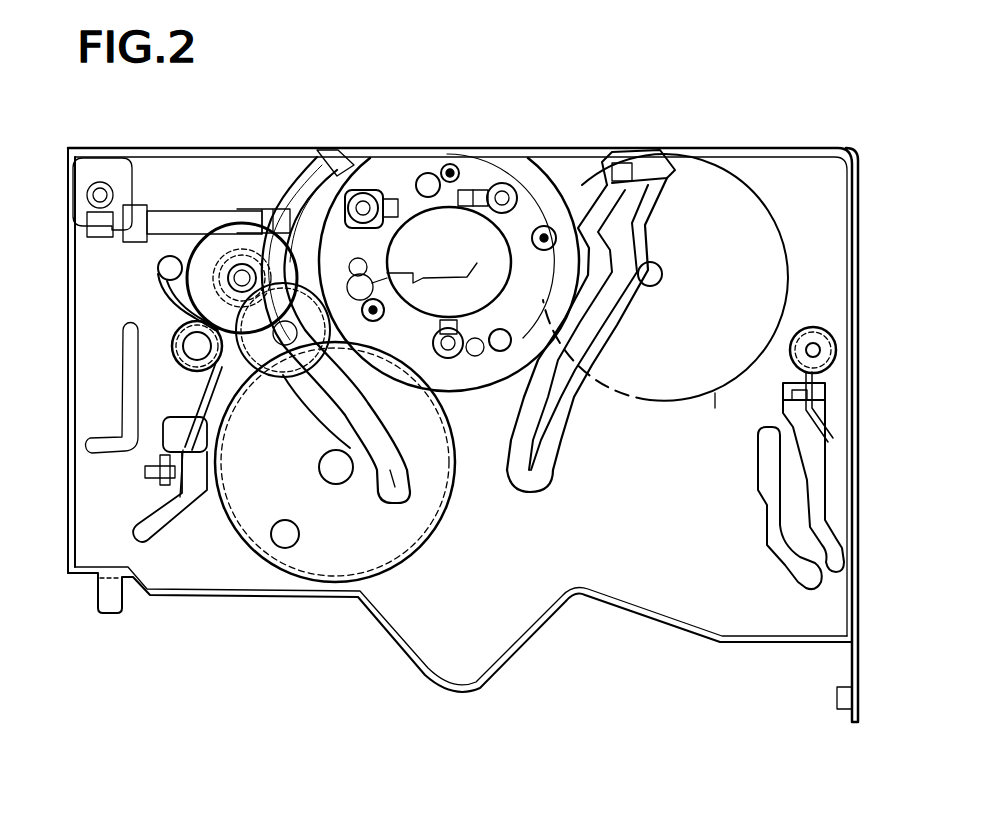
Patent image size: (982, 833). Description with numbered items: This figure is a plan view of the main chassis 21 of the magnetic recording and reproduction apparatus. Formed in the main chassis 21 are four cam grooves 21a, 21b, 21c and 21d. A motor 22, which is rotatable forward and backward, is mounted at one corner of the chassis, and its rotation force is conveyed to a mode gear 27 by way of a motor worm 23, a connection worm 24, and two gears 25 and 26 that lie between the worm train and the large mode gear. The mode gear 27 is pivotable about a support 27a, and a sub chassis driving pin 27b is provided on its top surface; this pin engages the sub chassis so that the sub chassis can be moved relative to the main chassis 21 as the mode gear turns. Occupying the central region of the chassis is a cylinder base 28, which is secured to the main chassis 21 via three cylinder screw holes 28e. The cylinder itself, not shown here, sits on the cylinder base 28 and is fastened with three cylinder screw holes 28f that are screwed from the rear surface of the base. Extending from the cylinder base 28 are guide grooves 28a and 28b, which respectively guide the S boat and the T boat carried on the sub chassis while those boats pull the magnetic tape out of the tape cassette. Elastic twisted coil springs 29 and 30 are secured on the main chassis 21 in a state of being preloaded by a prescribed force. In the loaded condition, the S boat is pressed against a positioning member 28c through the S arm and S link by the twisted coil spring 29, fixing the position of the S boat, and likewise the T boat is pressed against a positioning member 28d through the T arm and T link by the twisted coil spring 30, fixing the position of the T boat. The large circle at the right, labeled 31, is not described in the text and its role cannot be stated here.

The main chassis 21 is at (432, 657).
The cam groove 21a is at (121, 373).
The cam groove 21b is at (177, 510).
The cam groove 21c is at (763, 520).
The cam groove 21d is at (830, 513).
The motor 22 is at (133, 163).
The motor worm 23 is at (100, 190).
The connection worm 24 is at (180, 218).
The gear 25 is at (241, 275).
The gear 26 is at (250, 347).
The mode gear 27 is at (358, 550).
The support 27a is at (336, 470).
The sub chassis driving pin 27b is at (284, 548).
The cylinder base 28 is at (467, 478).
The guide groove 28a is at (400, 485).
The guide groove 28b is at (522, 453).
The positioning member 28c is at (365, 188).
The positioning member 28d is at (623, 165).
The cylinder screw holes 28e is at (500, 340).
The cylinder screw holes 28f is at (449, 262).
The twisted coil spring 29 is at (172, 336).
The twisted coil spring 30 is at (843, 372).
The reel table 31 is at (700, 188).